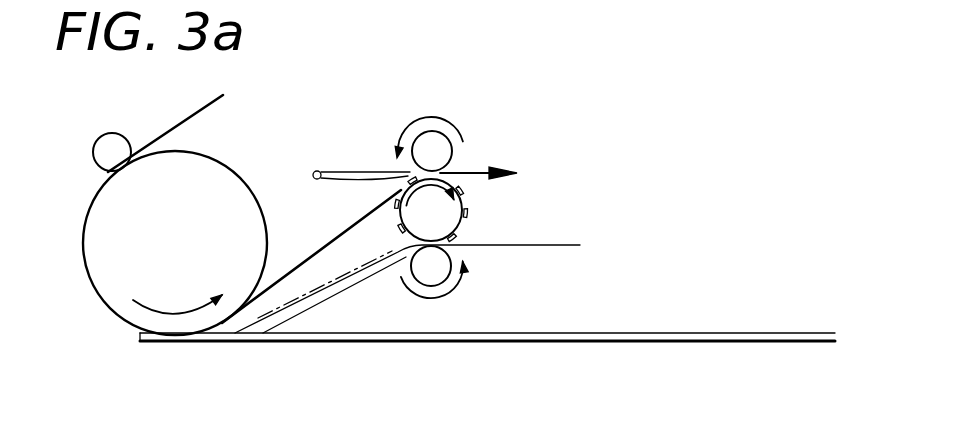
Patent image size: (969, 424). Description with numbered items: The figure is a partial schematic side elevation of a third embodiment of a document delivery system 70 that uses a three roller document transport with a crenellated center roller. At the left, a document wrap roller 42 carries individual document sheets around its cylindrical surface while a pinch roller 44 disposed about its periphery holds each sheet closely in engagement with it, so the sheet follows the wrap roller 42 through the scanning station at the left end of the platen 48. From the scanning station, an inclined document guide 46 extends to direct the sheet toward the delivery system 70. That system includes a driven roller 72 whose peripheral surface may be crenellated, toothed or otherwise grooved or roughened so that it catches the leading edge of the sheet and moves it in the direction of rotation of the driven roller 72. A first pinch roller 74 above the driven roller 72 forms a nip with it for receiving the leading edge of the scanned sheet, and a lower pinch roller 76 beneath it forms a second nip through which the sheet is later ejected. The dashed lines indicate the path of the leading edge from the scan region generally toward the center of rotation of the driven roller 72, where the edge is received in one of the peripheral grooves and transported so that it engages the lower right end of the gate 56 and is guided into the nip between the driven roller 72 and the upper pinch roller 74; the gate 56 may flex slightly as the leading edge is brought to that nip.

The document wrap roller 42 is at (90, 212).
The pinch roller 44 is at (104, 133).
The inclined document guide 46 is at (308, 305).
The platen 48 is at (610, 331).
The gate 56 is at (347, 182).
The document delivery system 70 is at (493, 193).
The driven roller 72 is at (463, 217).
The first pinch roller 74 is at (443, 133).
The lower pinch roller 76 is at (403, 281).